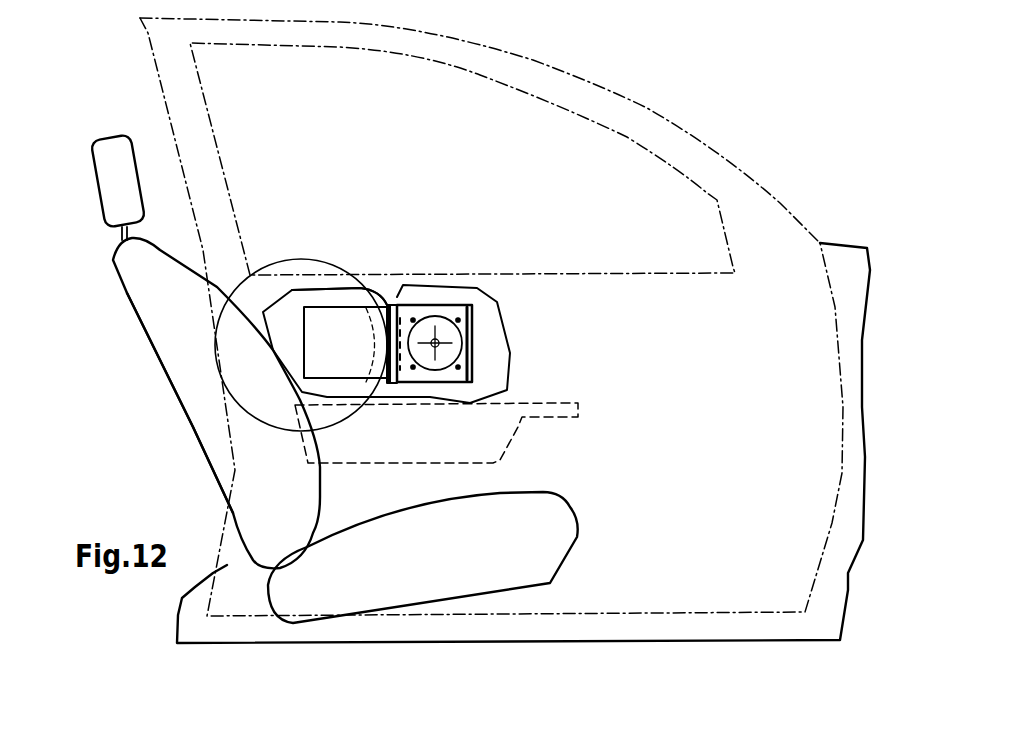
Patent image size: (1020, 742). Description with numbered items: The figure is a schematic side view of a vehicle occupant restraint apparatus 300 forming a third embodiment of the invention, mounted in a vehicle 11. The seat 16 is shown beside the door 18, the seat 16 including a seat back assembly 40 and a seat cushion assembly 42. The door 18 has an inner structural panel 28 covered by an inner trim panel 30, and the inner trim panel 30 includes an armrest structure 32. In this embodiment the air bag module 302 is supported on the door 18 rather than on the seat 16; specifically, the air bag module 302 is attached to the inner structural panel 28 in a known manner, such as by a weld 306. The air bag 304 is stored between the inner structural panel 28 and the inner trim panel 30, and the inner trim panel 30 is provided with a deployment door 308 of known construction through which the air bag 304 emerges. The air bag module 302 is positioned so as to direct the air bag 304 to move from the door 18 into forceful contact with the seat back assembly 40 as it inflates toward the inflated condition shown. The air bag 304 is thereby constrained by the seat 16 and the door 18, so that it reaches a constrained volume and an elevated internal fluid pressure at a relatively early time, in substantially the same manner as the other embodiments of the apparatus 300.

The vehicle 11 is at (670, 111).
The seat 16 is at (113, 293).
The door 18 is at (222, 469).
The inner structural panel 28 is at (500, 367).
The inner trim panel 30 is at (363, 279).
The armrest structure 32 is at (567, 403).
The seat back assembly 40 is at (183, 350).
The seat cushion assembly 42 is at (557, 518).
The vehicle occupant restraint apparatus 300 is at (420, 306).
The air bag module 302 is at (430, 291).
The air bag 304 is at (292, 258).
The weld 306 is at (473, 342).
The deployment door 308 is at (337, 307).